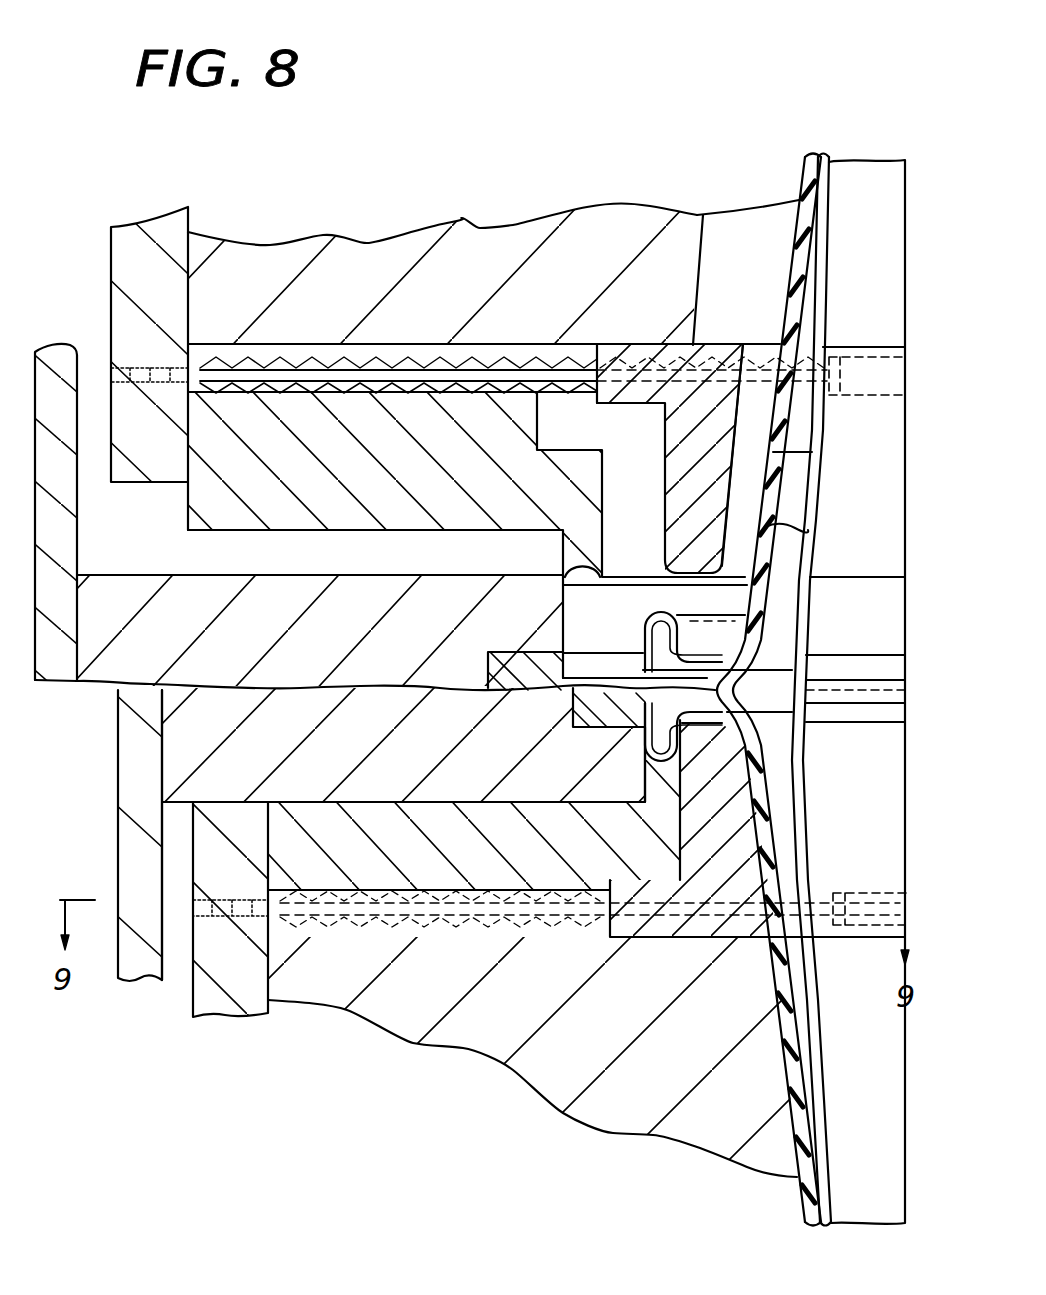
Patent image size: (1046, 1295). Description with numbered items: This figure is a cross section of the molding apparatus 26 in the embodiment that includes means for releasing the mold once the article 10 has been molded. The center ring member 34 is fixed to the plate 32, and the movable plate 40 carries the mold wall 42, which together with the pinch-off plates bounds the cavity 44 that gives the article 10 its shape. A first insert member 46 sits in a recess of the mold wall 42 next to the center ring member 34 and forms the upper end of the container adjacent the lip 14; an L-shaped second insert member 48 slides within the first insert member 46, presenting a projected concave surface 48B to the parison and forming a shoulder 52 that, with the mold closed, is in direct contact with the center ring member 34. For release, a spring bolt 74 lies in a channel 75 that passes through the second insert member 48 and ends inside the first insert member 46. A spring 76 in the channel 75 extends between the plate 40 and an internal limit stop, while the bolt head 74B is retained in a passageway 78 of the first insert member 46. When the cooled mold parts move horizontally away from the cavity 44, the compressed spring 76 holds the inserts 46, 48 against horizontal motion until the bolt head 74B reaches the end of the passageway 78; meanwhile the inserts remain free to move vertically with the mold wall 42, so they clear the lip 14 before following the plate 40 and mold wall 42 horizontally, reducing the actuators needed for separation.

The article 10 is at (808, 537).
The lip 14 is at (644, 614).
The molding apparatus 26 is at (478, 150).
The plate 32 is at (62, 528).
The center ring member 34 is at (338, 648).
The movable plate 40 is at (126, 262).
The mold wall 42 is at (485, 237).
The cavity 44 is at (884, 233).
The first insert member 46 is at (722, 350).
The second insert member 48 is at (418, 528).
The concave surface 48B is at (568, 558).
The shoulder 52 is at (462, 532).
The spring bolt 74 is at (535, 440).
The bolt head 74B is at (838, 375).
The channel 75 is at (299, 440).
The spring 76 is at (215, 412).
The passageway 78 is at (868, 347).